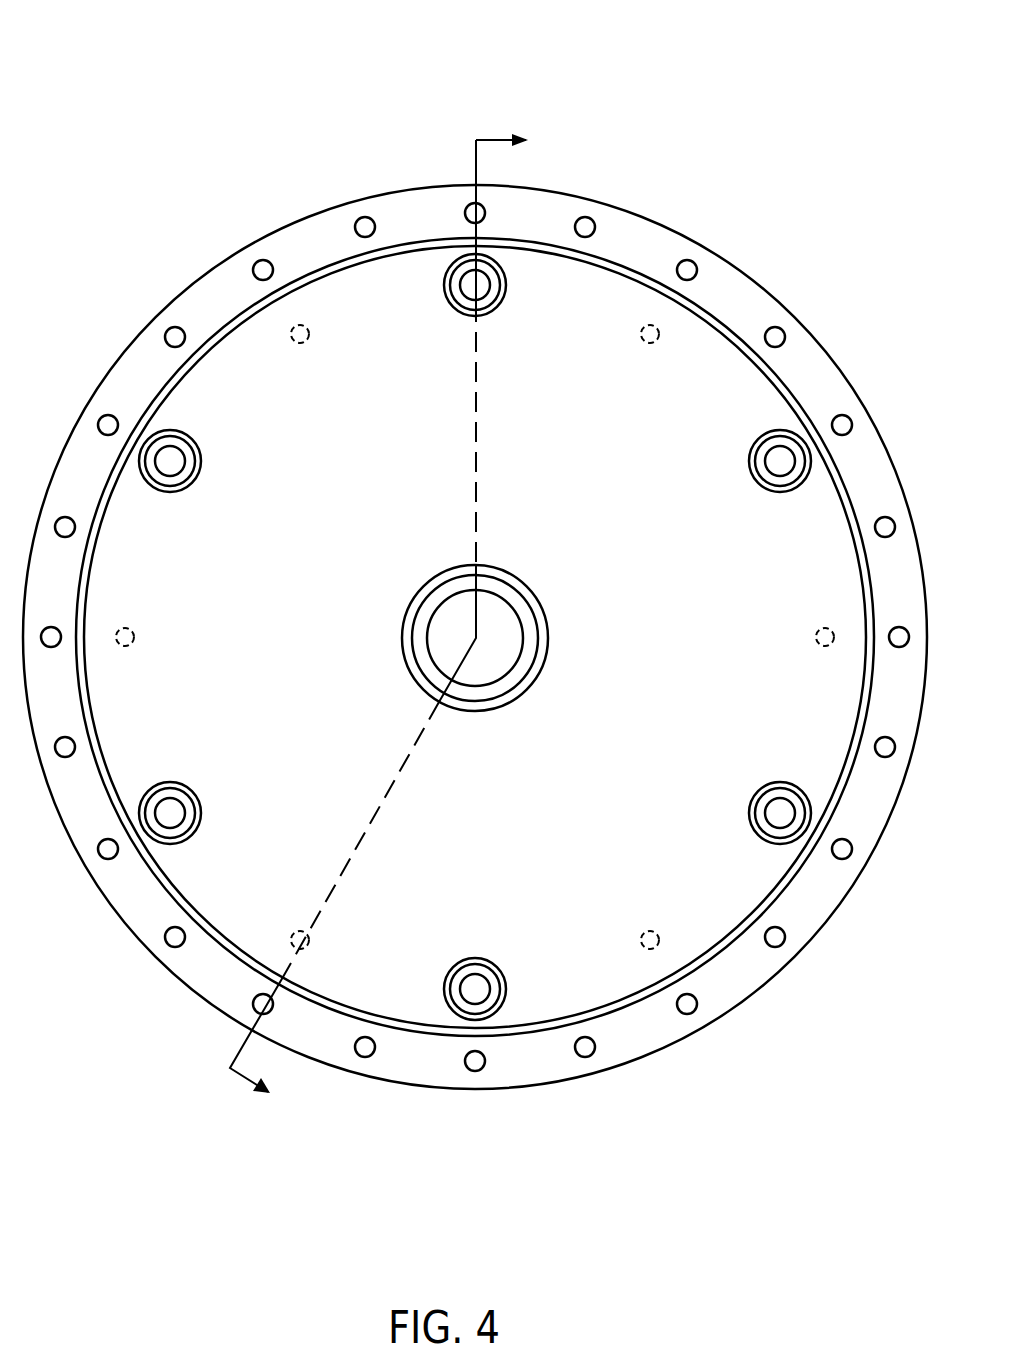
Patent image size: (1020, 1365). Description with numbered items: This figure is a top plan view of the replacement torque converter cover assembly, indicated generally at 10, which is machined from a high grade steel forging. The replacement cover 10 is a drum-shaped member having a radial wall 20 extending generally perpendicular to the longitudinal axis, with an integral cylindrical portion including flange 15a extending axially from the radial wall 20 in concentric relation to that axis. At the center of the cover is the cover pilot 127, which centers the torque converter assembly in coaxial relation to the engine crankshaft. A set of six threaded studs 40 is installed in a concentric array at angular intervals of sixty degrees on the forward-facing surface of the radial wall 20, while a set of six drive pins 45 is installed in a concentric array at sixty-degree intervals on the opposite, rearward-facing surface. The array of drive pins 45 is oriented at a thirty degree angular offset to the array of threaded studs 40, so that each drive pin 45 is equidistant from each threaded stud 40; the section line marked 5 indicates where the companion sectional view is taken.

The replacement cover 10 is at (306, 128).
The flange 15a is at (753, 285).
The radial wall 20 is at (492, 808).
The threaded studs 40 is at (492, 302).
The drive pins 45 is at (310, 340).
The cover pilot 127 is at (548, 633).
The section line 5- 5 is at (366, 608).